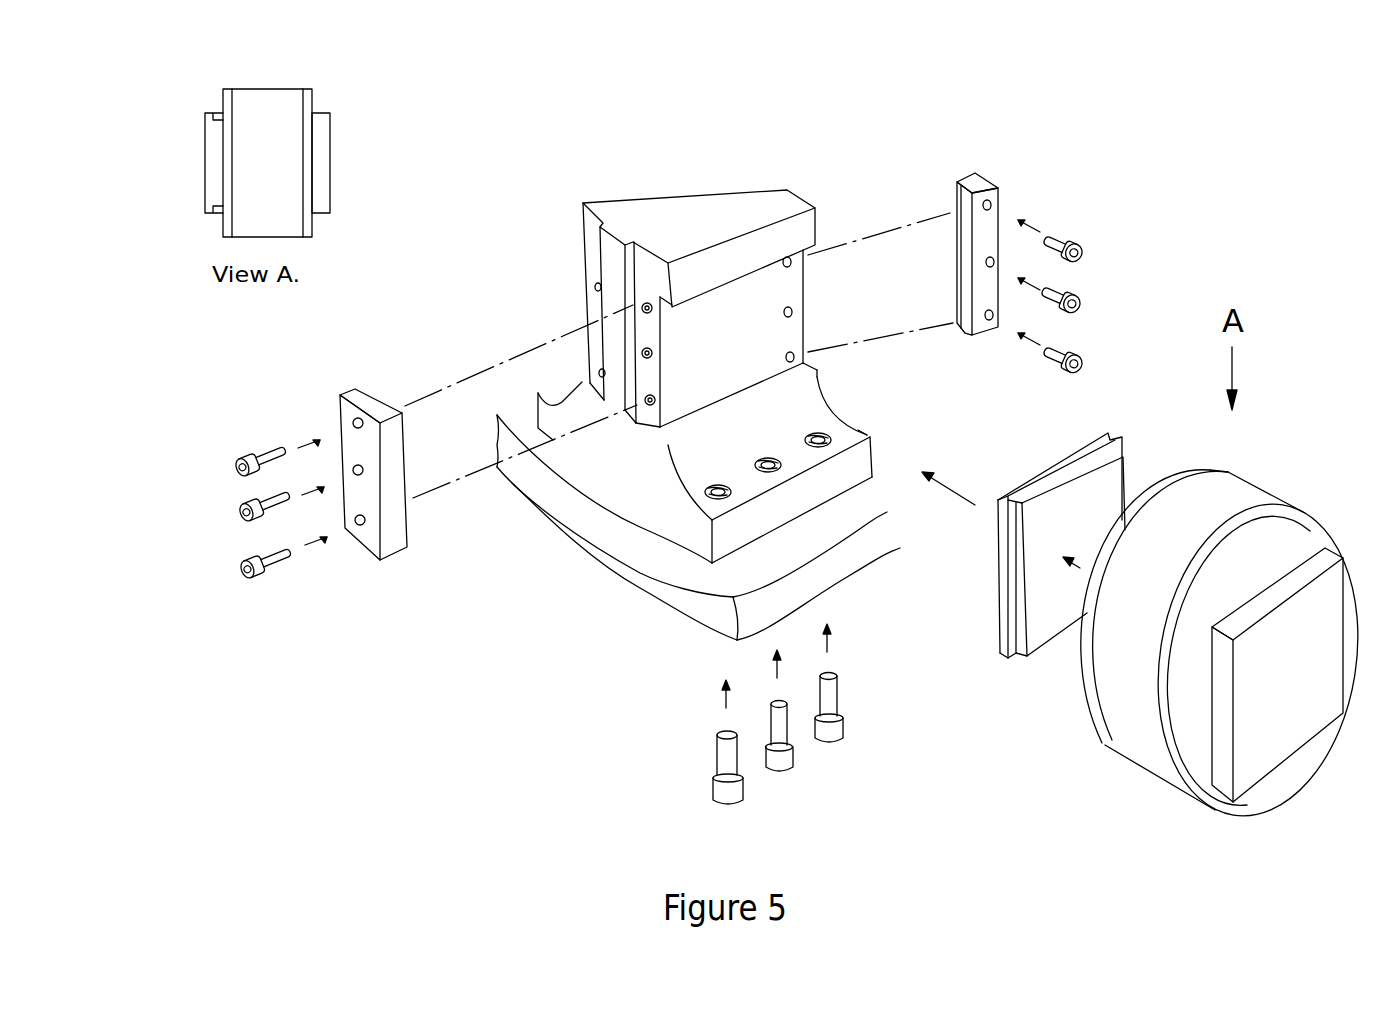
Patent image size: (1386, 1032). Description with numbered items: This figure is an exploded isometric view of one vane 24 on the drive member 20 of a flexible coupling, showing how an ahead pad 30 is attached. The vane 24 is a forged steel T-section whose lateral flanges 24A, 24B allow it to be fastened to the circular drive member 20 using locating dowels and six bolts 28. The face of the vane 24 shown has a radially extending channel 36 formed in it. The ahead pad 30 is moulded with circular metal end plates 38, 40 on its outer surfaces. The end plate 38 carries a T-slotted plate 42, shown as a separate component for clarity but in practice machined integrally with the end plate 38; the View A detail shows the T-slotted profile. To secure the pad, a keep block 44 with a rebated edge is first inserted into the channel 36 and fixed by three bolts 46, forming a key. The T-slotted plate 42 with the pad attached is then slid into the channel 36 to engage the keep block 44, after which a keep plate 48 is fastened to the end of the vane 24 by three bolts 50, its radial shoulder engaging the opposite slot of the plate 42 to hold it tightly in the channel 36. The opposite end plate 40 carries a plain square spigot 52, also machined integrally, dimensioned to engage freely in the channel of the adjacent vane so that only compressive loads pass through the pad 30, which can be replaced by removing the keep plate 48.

The drive member 20 is at (677, 602).
The vane 24 is at (694, 469).
The lateral flange 24A is at (820, 423).
The lateral flange 24B is at (562, 395).
The bolts 28 is at (737, 803).
The ahead pad 30 is at (801, 458).
The channel 36 is at (732, 345).
The end plate 38 is at (1103, 745).
The end plate 40 is at (1195, 802).
The T-slotted plate 42 is at (1097, 502).
The keep block 44 is at (982, 242).
The bolts 46 is at (1081, 244).
The keep plate 48 is at (370, 537).
The bolts 50 is at (245, 475).
The spigot 52 is at (1257, 760).